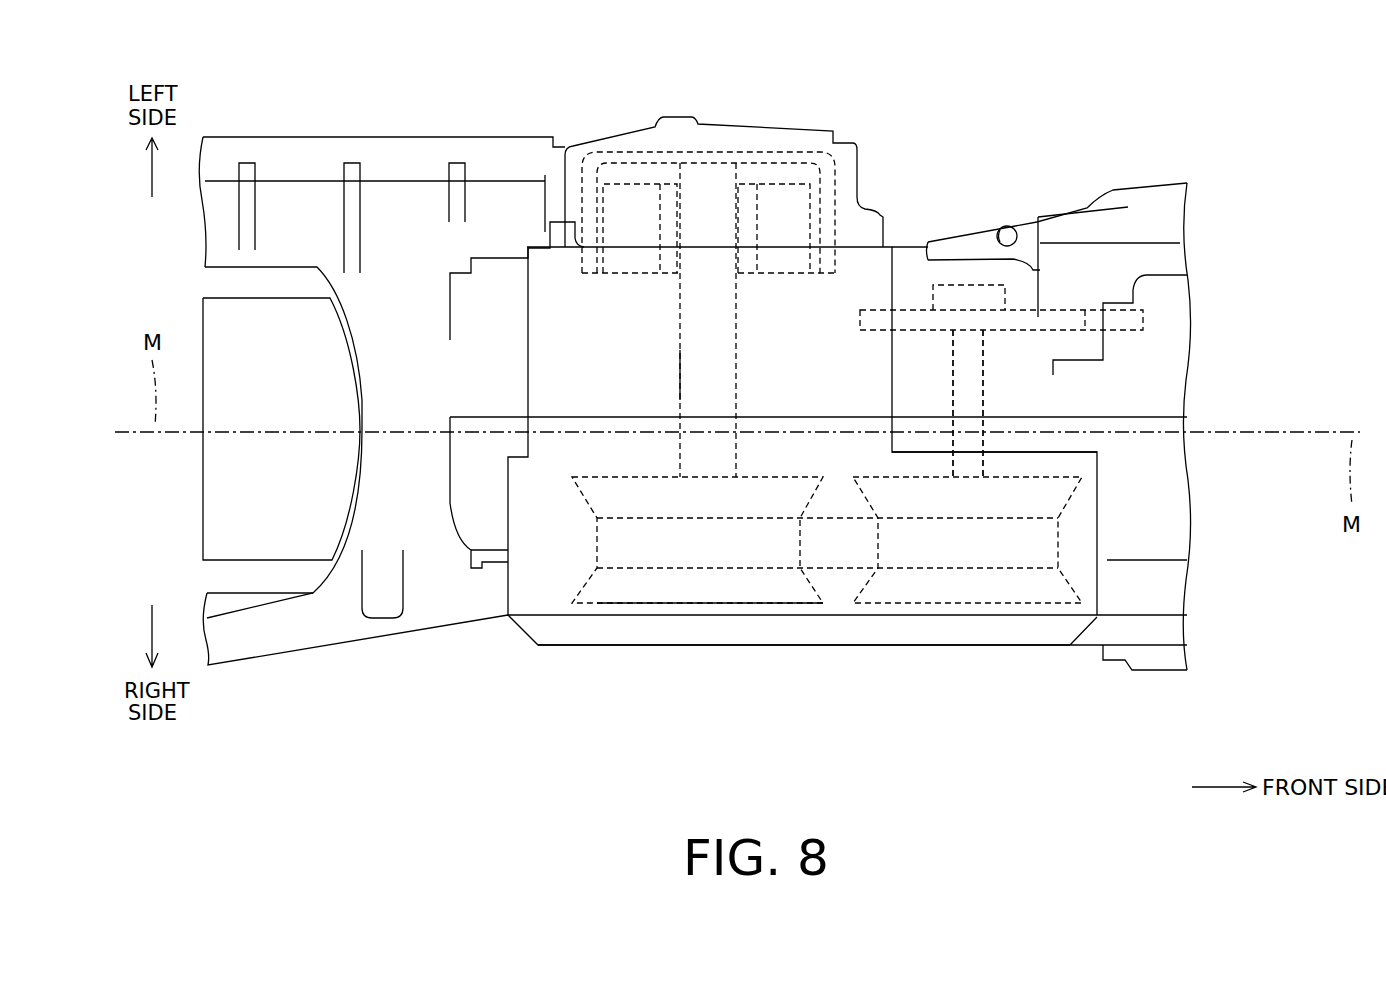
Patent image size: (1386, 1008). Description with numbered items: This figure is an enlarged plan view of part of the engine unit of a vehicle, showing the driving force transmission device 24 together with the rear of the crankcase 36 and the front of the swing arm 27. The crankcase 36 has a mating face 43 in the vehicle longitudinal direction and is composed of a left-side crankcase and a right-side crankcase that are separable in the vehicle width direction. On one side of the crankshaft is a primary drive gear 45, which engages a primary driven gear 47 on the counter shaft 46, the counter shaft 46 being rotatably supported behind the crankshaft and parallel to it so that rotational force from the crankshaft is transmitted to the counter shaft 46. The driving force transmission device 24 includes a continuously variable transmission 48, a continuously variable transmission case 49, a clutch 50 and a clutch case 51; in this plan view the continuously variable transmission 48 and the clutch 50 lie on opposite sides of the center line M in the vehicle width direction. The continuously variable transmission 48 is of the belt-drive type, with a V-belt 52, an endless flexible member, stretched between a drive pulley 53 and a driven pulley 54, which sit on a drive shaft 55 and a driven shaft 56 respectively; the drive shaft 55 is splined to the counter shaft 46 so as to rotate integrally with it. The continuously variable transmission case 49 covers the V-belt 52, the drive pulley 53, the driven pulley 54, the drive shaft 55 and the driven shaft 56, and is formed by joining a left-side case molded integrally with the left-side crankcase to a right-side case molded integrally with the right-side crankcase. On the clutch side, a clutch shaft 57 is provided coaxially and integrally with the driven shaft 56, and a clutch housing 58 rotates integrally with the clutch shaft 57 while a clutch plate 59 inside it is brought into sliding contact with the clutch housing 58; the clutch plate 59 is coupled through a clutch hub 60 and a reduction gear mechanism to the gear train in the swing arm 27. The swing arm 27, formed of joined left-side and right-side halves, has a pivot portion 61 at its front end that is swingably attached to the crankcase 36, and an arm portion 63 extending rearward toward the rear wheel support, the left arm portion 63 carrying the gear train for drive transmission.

The driving force transmission device 24 is at (905, 670).
The swing arm 27 is at (392, 152).
The crankcase 36 is at (1165, 338).
The mating face 43 is at (1137, 415).
The primary drive gear 45 is at (1118, 310).
The counter shaft 46 is at (952, 360).
The primary driven gear 47 is at (1028, 310).
The continuously variable transmission 48 is at (853, 632).
The continuously variable transmission case 49 is at (855, 280).
The clutch 50 is at (731, 130).
The clutch case 51 is at (793, 130).
The V-belt 52 is at (835, 543).
The drive pulley 53 is at (982, 605).
The driven pulley 54 is at (722, 604).
The drive shaft 55 is at (983, 443).
The driven shaft 56 is at (680, 440).
The clutch shaft 57 is at (678, 362).
The clutch housing 58 is at (623, 150).
The clutch plate 59 is at (773, 273).
The clutch hub 60 is at (658, 260).
The pivot portion 61 is at (523, 137).
The arm portion 63 is at (303, 148).